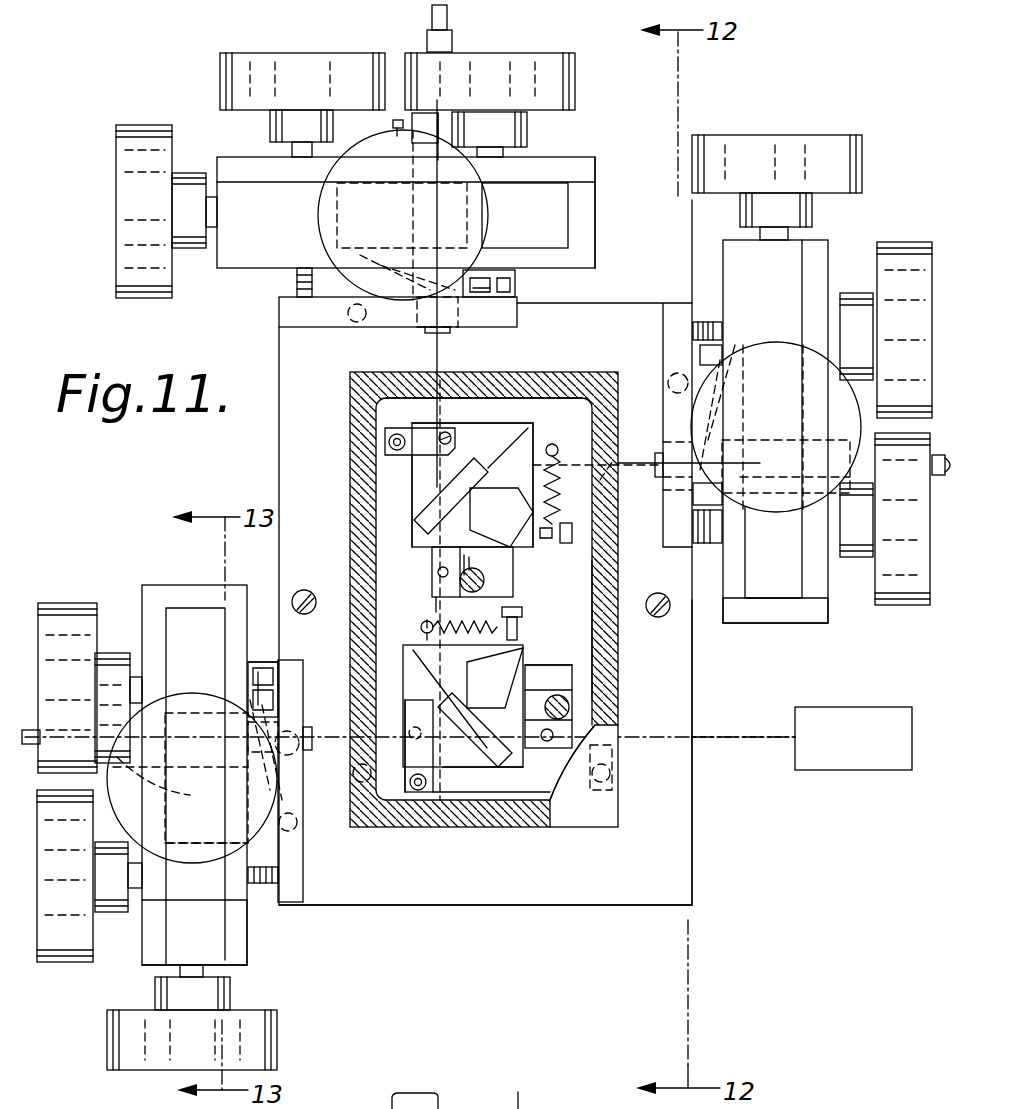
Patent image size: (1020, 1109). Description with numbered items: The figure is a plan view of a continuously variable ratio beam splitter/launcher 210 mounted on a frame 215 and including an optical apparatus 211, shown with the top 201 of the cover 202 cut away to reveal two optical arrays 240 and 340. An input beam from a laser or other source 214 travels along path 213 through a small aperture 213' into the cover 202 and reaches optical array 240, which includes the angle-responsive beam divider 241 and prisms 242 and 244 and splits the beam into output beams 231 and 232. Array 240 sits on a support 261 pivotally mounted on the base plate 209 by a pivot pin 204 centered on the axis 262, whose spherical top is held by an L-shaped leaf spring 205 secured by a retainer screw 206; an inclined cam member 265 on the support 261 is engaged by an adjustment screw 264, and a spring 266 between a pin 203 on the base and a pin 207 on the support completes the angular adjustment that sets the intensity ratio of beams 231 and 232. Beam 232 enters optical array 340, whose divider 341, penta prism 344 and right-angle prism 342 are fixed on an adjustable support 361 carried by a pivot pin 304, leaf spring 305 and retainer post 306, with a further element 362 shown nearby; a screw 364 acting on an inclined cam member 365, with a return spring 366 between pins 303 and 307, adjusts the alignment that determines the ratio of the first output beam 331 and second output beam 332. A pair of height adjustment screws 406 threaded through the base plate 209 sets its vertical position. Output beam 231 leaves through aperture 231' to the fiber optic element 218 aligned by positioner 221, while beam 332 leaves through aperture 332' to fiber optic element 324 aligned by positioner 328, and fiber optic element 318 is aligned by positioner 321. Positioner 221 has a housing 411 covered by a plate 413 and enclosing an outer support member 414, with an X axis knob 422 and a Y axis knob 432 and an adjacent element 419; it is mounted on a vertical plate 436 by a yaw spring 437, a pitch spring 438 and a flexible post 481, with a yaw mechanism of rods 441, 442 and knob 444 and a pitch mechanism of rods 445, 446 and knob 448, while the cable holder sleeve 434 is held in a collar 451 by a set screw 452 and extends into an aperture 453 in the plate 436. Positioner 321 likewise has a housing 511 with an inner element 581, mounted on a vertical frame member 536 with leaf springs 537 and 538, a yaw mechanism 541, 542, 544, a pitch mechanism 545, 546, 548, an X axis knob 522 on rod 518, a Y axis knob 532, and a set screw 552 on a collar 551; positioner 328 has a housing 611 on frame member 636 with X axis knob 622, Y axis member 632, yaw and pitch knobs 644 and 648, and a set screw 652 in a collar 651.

The top of cover 201 is at (585, 828).
The cover 202 is at (345, 518).
The pin 203 is at (437, 621).
The pivot pin 204 is at (463, 706).
The L-shaped leaf spring 205 is at (446, 806).
The retainer post or screw 206 is at (416, 793).
The pin 207 is at (523, 617).
The base plate 209 is at (610, 905).
The continuously variable ratio beam splitter/launcher 210 is at (548, 920).
The optical apparatus 211 is at (588, 596).
The input beam path 213 is at (743, 761).
The aperture 213' is at (637, 767).
The light source 214 is at (850, 771).
The frame 215 is at (700, 882).
The fiber optic light transmission element 218 is at (38, 728).
The positioner 221 is at (172, 579).
The output beam 231 is at (314, 751).
The aperture 231' is at (305, 726).
The output beam 232 is at (440, 606).
The optical array 240 is at (532, 663).
The angle-responsive beam divider 241 is at (503, 773).
The prism 242 is at (433, 646).
The prism 244 is at (509, 696).
The support 261 is at (448, 771).
The axis 262 is at (400, 791).
The adjustment screw 264 is at (570, 706).
The inclined cam member 265 is at (565, 691).
The spring 266 is at (462, 621).
The pin 303 is at (560, 445).
The pivot pin 304 is at (493, 377).
The L-shaped leaf spring 305 is at (380, 430).
The retainer post 306 is at (388, 447).
The pin 307 is at (573, 531).
The fiber optic light transmission element 318 is at (455, 19).
The positioner 321 is at (205, 153).
The fiber optic light transmission element 324 is at (938, 477).
The positioner 328 is at (850, 229).
The first output beam 331 is at (437, 341).
The second output beam 332 is at (646, 476).
The aperture 332' is at (638, 447).
The optical array 340 is at (400, 483).
The divider 341 is at (400, 528).
The right-angle prism 342 is at (548, 425).
The penta prism 344 is at (517, 530).
The support 361 is at (478, 424).
The bolt 362 is at (447, 430).
The adjustable screw 364 is at (485, 579).
The inclined cam member 365 is at (508, 589).
The spring 366 is at (562, 491).
The height adjustment screws 406 is at (304, 590).
The housing 411 is at (250, 913).
The plate 413 is at (155, 953).
The outer support member 414 is at (196, 621).
The pulley 419 is at (205, 971).
The X axis adjustment knob 422 is at (148, 1069).
The Y-axis adjustment knob 432 is at (180, 861).
The cable holder sleeve 434 is at (45, 731).
The plate 436 is at (305, 903).
The yaw spring 437 is at (297, 823).
The pitch spring 438 is at (270, 673).
The rod 441 is at (278, 877).
The rod 442 is at (130, 906).
The yaw adjustment knob 444 is at (45, 963).
The rod 445 is at (255, 693).
The rod 446 is at (172, 654).
The pitch adjustment knob 448 is at (65, 606).
The collar 451 is at (120, 761).
The set screw 452 is at (206, 820).
The aperture 453 is at (325, 765).
The post or threaded rod 481 is at (235, 733).
The main housing 511 is at (600, 215).
The rod 518 is at (212, 236).
The knob 522 is at (145, 299).
The knob 532 is at (318, 220).
The vertical frame member 536 is at (279, 320).
The yaw leaf spring 537 is at (403, 215).
The pitch leaf spring 538 is at (515, 287).
The yaw adjustment mechanism element 541 is at (297, 286).
The yaw adjustment mechanism element 542 is at (292, 153).
The yaw adjustment mechanism element 544 is at (232, 56).
The pitch adjustment mechanism element 545 is at (490, 293).
The pitch adjustment mechanism element 546 is at (503, 158).
The pitch adjustment mechanism element 548 is at (575, 81).
The collar 551 is at (430, 126).
The set screw 552 is at (395, 121).
The inner housing 581 is at (495, 247).
The housing 611 is at (775, 631).
The X axis adjustment knob 622 is at (828, 136).
The Y axis adjustment member 632 is at (790, 346).
The vertical frame member 636 is at (676, 304).
The yaw adjustment knob 644 is at (905, 247).
The pitch adjustment knob 648 is at (905, 607).
The collar 651 is at (812, 475).
The Z axis set screw adjustment 652 is at (822, 413).